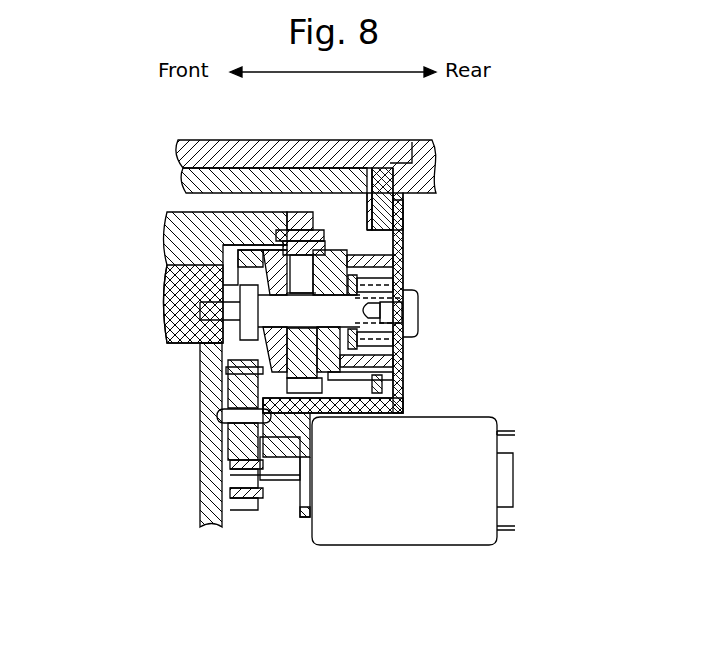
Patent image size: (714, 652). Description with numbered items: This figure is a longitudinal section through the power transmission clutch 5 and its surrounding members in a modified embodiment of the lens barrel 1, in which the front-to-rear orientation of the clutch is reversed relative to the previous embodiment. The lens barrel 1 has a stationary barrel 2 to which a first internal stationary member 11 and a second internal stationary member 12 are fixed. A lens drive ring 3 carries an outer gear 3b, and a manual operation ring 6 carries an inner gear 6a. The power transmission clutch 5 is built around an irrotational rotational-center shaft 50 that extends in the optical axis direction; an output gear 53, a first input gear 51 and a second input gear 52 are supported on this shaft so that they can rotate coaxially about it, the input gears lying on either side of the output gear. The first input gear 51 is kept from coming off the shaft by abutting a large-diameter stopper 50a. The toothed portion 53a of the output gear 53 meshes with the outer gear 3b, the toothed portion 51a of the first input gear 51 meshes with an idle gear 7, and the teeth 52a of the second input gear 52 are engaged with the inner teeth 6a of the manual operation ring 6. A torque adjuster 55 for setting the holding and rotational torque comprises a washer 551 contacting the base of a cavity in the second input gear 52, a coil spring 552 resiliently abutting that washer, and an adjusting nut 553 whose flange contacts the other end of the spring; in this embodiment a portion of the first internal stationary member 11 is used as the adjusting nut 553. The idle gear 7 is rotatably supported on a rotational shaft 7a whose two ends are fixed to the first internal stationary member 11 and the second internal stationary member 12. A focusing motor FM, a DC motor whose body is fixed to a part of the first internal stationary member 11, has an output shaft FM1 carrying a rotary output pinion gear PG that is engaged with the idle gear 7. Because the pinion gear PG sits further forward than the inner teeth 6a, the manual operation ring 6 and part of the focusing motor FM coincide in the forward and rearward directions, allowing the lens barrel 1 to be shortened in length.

The lens barrel 1 is at (76, 141).
The stationary barrel 2 is at (423, 174).
The lens drive ring 3 is at (175, 235).
The outer gear 3b is at (286, 167).
The toothed portion 53a is at (300, 231).
The power transmission clutch 5 is at (236, 277).
The manual operation ring 6 is at (394, 166).
The inner gear 6a is at (464, 212).
The toothed portion 52a is at (380, 213).
The first internal stationary member 11 is at (403, 266).
The second internal stationary member 12 is at (207, 510).
The rotational-center shaft 50 is at (213, 313).
The large-diameter stopper 50a is at (240, 337).
The first input gear 51 is at (258, 390).
The toothed portion 51a is at (255, 366).
The second input gear 52 is at (381, 378).
The output gear 53 is at (313, 382).
The torque adjuster 55 is at (440, 320).
The washer 551 is at (362, 348).
The coil spring 552 is at (373, 281).
The adjusting nut 553 is at (402, 337).
The idle gear 7 is at (235, 446).
The rotational shaft 7a is at (234, 416).
The rotary output pinion gear PG is at (250, 500).
The output shaft FM1 is at (281, 485).
The focusing motor FM is at (463, 545).